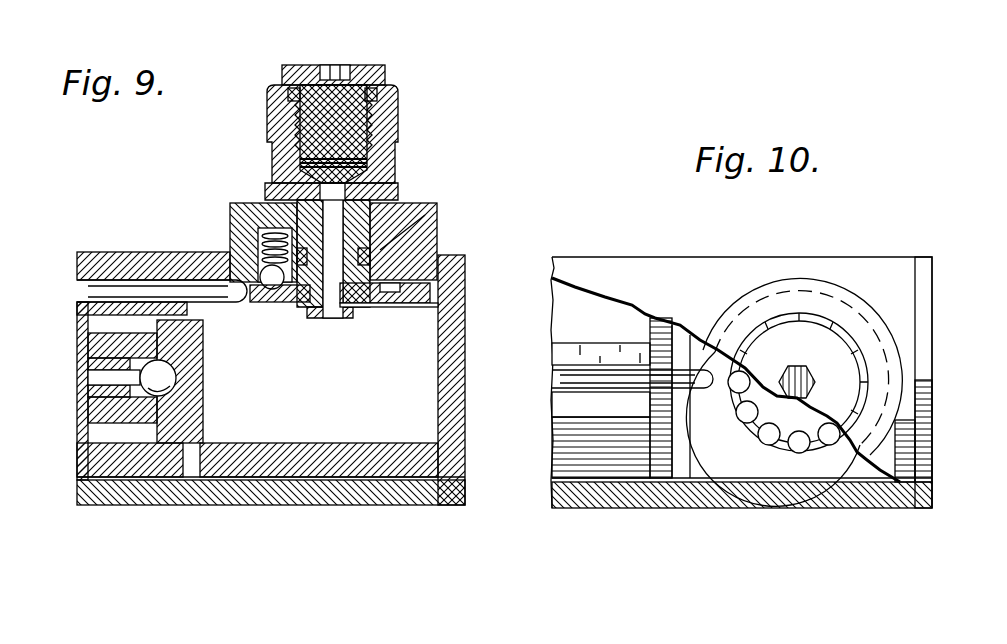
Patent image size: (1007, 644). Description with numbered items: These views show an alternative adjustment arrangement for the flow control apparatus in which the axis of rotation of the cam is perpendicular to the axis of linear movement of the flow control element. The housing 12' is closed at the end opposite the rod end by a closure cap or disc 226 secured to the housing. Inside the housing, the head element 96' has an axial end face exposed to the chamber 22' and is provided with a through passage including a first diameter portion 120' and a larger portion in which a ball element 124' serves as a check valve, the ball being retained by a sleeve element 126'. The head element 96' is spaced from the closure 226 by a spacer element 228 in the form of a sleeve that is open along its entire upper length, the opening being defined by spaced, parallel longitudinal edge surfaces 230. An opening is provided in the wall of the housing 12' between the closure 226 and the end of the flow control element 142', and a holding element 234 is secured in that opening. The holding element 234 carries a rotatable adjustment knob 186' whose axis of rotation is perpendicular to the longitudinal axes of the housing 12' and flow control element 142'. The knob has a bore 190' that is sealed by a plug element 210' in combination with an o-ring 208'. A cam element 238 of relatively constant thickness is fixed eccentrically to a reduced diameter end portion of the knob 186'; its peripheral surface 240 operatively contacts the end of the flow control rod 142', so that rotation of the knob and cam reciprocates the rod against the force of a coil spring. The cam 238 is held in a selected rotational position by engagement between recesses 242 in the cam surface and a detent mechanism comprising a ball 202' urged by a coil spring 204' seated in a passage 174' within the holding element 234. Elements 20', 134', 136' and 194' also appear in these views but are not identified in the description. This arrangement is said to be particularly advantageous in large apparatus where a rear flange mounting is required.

In FIG. 9, the housing 12' is at (267, 371).
In FIG. 10, the housing 12' is at (741, 394).
In FIG. 9, the housing body 20' is at (136, 376).
In FIG. 10, the housing body 20' is at (741, 519).
In FIG. 9, the chamber 22' is at (112, 331).
In FIG. 9, the head element 96' is at (125, 492).
In FIG. 10, the head element 96' is at (686, 433).
In FIG. 9, the first diameter portion 120' is at (185, 381).
In FIG. 9, the ball element 124' is at (211, 378).
In FIG. 9, the sleeve element 126' is at (96, 417).
In FIG. 10, the port 134' is at (601, 341).
In FIG. 10, the port 136' is at (571, 435).
In FIG. 9, the flow control element 142' is at (162, 253).
In FIG. 10, the flow control element 142' is at (602, 383).
In FIG. 9, the passage 174' is at (238, 237).
In FIG. 9, the adjustment knob 186' is at (375, 134).
In FIG. 10, the adjustment knob 186' is at (799, 333).
In FIG. 9, the bore 190' is at (400, 246).
In FIG. 9, the block 194' is at (436, 240).
In FIG. 9, the ball element 202' is at (231, 256).
In FIG. 9, the coil spring 204' is at (252, 218).
In FIG. 9, the o-ring 208' is at (389, 131).
In FIG. 9, the plug element 210' is at (344, 47).
In FIG. 10, the plug element 210' is at (836, 307).
In FIG. 9, the closure cap 226 is at (450, 340).
In FIG. 10, the closure cap 226 is at (926, 278).
In FIG. 9, the spacer element 228 is at (440, 460).
In FIG. 9, the longitudinal edge surfaces 230 is at (440, 305).
In FIG. 10, the longitudinal edge surfaces 230 is at (712, 440).
In FIG. 9, the holding element 234 is at (420, 250).
In FIG. 10, the holding element 234 is at (742, 288).
In FIG. 9, the cam element 238 is at (356, 303).
In FIG. 10, the cam element 238 is at (800, 462).
In FIG. 9, the peripheral surface 240 is at (432, 292).
In FIG. 9, the recesses 242 is at (270, 303).
In FIG. 10, the recesses 242 is at (832, 445).